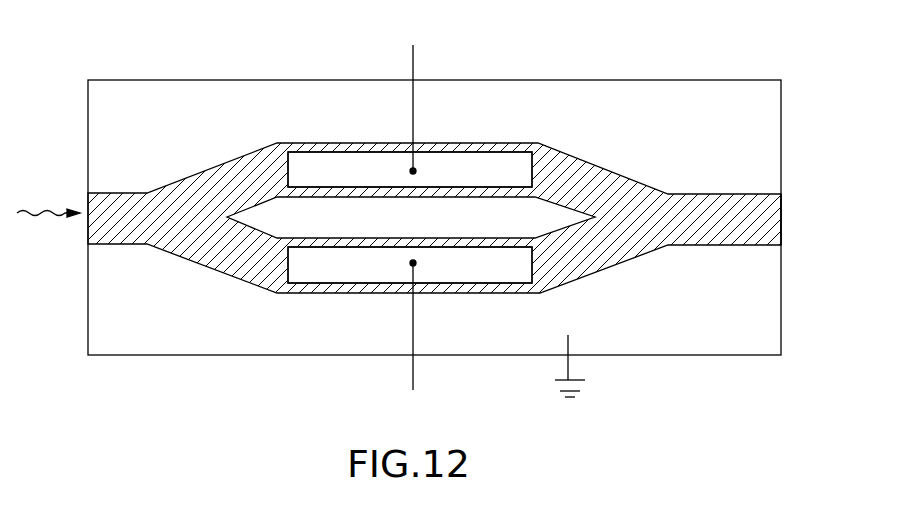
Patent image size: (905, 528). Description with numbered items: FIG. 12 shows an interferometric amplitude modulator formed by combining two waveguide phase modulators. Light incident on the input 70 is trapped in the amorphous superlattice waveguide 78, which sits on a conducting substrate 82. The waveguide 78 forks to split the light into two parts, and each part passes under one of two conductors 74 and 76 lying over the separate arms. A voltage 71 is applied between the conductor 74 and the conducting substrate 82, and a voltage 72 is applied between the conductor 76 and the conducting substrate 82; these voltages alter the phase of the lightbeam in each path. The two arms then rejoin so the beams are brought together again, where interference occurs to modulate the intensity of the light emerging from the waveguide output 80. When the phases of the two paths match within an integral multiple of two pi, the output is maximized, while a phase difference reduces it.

The input 70 is at (88, 198).
The voltage 71 is at (413, 48).
The voltage 72 is at (413, 386).
The conductor 74 is at (489, 157).
The conductor 76 is at (482, 276).
The amorphous superlattice waveguide 78 is at (185, 259).
The waveguide output 80 is at (781, 215).
The conducting substrate 82 is at (697, 337).